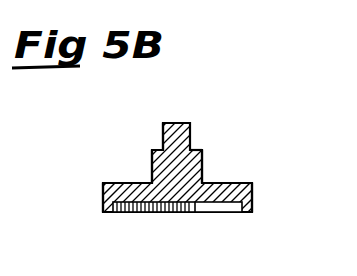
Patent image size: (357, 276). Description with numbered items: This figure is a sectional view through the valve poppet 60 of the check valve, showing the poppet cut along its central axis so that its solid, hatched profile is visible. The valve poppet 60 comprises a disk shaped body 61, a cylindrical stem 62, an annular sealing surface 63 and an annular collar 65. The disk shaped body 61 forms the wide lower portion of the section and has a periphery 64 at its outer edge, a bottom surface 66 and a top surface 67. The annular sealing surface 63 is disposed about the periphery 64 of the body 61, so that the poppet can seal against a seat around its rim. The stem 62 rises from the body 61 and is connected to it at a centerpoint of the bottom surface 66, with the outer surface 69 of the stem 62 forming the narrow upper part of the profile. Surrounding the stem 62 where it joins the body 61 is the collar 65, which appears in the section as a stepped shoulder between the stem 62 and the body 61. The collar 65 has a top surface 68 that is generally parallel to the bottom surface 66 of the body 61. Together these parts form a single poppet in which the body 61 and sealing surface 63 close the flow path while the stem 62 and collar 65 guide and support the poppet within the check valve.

The valve poppet 60 is at (220, 117).
The disk shaped body 61 is at (110, 184).
The cylindrical stem 62 is at (186, 123).
The annular sealing surface 63 is at (103, 208).
The periphery 64 is at (253, 195).
The annular collar 65 is at (207, 178).
The bottom surface 66 is at (138, 183).
The top surface 67 is at (192, 212).
The top surface of collar 68 is at (203, 147).
The outer surface 69 is at (163, 135).